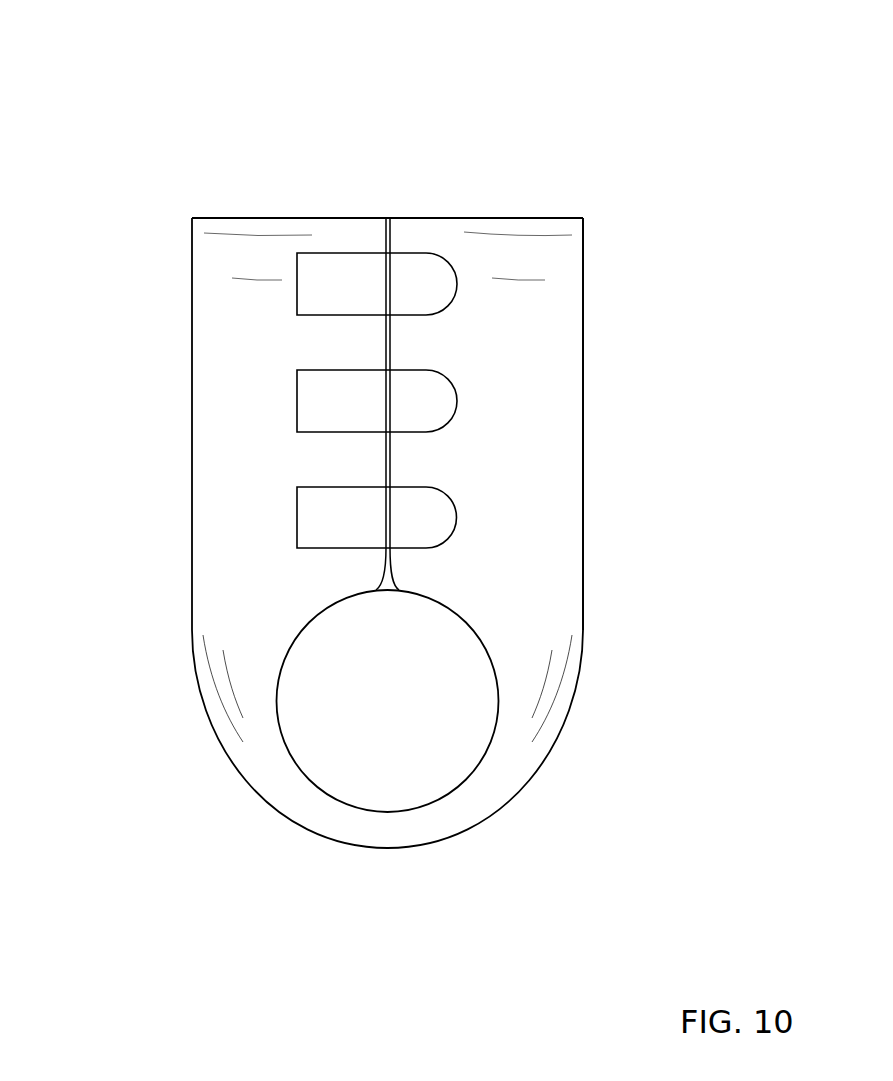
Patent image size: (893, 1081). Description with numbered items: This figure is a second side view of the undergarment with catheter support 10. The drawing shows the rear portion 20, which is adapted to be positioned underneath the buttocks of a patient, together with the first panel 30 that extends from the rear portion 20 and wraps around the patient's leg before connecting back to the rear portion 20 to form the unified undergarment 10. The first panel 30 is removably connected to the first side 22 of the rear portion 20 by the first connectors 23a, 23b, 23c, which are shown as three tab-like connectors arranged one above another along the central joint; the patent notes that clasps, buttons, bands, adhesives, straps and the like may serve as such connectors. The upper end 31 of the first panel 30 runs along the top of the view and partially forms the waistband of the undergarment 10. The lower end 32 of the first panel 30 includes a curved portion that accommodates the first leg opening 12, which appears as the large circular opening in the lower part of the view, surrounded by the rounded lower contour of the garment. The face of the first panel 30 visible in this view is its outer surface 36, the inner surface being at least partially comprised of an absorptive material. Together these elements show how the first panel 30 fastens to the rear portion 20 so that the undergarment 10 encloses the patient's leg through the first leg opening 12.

The undergarment with catheter support 10 is at (140, 92).
The first leg opening 12 is at (445, 797).
The rear portion 20 is at (192, 340).
The first side of the rear portion 22 is at (386, 452).
The first connector 23a is at (441, 284).
The first connector 23b is at (441, 400).
The first connector 23c is at (441, 517).
The first panel 30 is at (545, 352).
The upper end 31 is at (478, 218).
The lower end 32 is at (396, 588).
The outer surface 36 is at (528, 482).